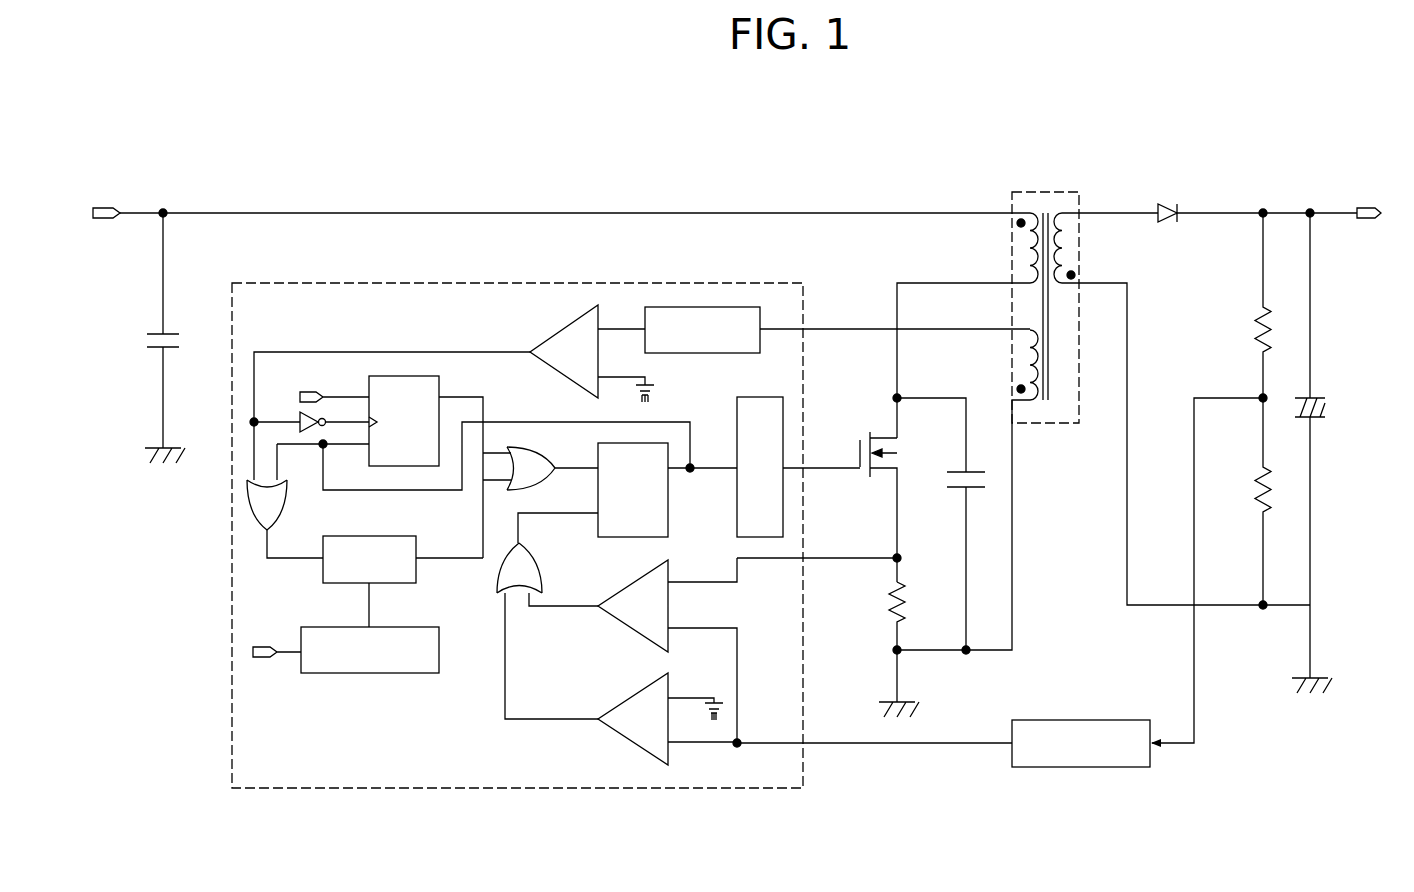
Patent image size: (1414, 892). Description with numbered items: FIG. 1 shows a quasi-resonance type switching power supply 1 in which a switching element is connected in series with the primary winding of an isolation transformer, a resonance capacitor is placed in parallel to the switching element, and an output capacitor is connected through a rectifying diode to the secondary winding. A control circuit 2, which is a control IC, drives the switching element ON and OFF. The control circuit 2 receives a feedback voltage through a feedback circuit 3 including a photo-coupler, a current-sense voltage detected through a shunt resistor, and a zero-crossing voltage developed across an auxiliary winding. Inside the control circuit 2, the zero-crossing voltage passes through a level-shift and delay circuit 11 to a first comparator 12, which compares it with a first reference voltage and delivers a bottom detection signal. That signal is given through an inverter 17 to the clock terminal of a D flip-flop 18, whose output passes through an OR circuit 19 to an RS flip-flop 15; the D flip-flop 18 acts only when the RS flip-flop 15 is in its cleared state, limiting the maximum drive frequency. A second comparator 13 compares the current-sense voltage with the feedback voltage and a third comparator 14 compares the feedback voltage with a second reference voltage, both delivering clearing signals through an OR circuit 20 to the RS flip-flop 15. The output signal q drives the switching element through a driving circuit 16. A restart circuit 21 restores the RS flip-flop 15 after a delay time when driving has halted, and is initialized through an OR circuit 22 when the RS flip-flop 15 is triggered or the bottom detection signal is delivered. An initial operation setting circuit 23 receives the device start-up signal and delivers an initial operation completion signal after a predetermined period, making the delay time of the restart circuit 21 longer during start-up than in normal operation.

The switching power supply 1 is at (824, 186).
The control circuit 2 is at (497, 318).
The feedback circuit 3 is at (1110, 720).
The level-shift and delay circuit 11 is at (645, 310).
The first comparator 12 is at (556, 335).
The second comparator 13 is at (624, 590).
The third comparator 14 is at (624, 702).
The RS flip-flop 15 is at (643, 512).
The driving circuit 16 is at (737, 412).
The inverter 17 is at (311, 432).
The D flip-flop 18 is at (372, 377).
The OR circuit 19 is at (520, 447).
The OR circuit 20 is at (535, 565).
The restart circuit 21 is at (398, 536).
The OR circuit 22 is at (289, 512).
The initial operation setting circuit 23 is at (439, 650).